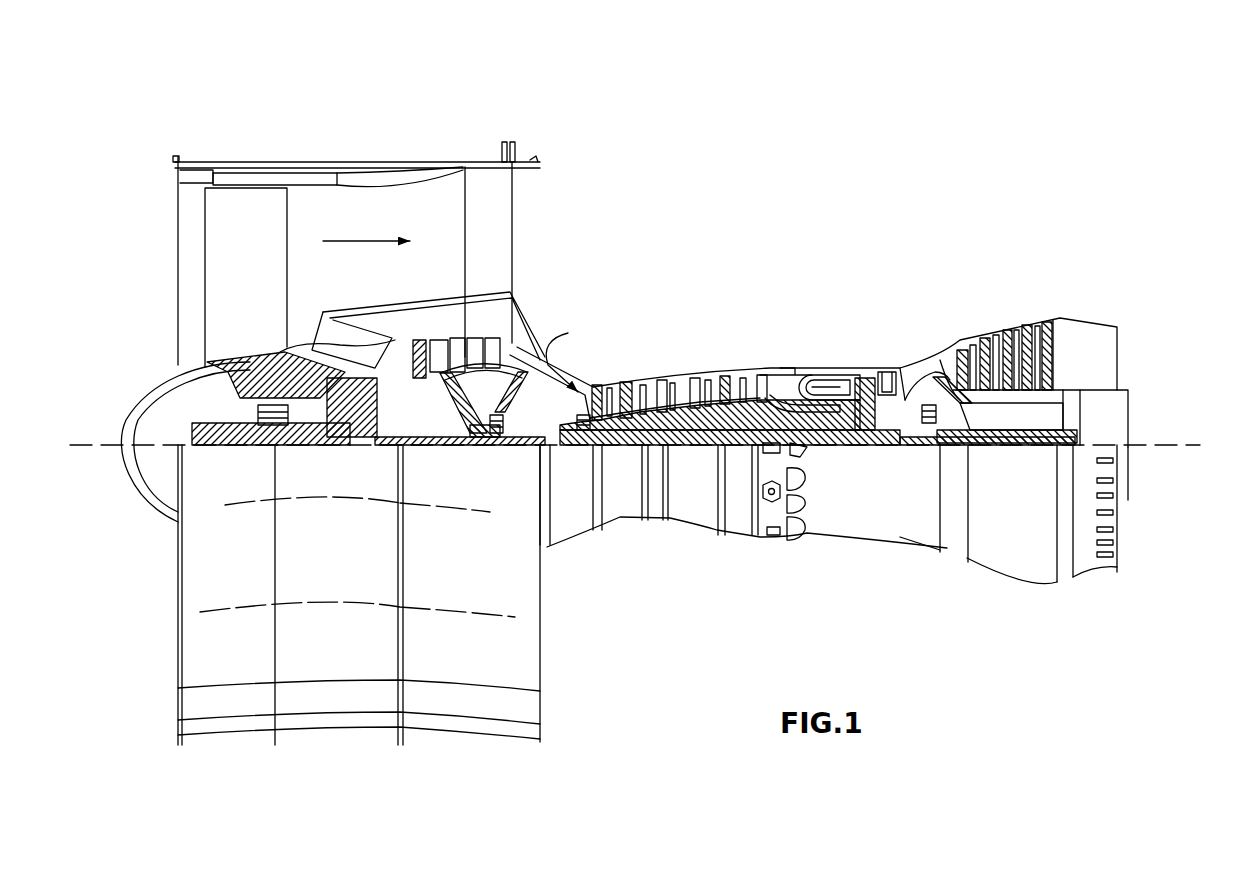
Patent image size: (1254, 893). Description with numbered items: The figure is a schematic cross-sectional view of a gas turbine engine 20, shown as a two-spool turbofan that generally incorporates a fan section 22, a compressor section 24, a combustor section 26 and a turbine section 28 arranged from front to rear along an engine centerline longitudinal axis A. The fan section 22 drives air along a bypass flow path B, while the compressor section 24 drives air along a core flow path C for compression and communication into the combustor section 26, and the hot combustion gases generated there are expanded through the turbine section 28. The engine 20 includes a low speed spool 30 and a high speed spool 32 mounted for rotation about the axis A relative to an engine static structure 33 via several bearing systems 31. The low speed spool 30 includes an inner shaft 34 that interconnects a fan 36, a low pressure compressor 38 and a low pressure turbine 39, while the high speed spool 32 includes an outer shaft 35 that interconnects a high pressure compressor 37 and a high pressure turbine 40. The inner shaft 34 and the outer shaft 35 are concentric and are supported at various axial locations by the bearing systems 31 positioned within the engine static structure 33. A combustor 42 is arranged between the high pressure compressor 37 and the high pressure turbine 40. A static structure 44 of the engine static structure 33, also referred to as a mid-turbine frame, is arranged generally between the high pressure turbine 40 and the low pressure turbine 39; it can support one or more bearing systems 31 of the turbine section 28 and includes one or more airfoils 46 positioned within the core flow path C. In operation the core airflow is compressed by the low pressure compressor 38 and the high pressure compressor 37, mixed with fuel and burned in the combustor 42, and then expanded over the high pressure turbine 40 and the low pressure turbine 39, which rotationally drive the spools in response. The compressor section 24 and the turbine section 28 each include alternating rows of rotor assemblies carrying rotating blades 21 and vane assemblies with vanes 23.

The gas turbine engine 20 is at (820, 212).
The rotating blades 21 is at (422, 343).
The fan section 22 is at (287, 157).
The vanes 23 is at (472, 347).
The compressor section 24 is at (590, 355).
The combustor section 26 is at (812, 340).
The turbine section 28 is at (958, 308).
The low speed spool 30 is at (695, 448).
The bearing systems 31 is at (270, 415).
The high speed spool 32 is at (737, 400).
The engine static structure 33 is at (737, 533).
The inner shaft 34 is at (566, 450).
The outer shaft 35 is at (823, 445).
The fan 36 is at (260, 293).
The high pressure compressor 37 is at (672, 405).
The low pressure compressor 38 is at (514, 300).
The low pressure turbine 39 is at (1005, 337).
The high pressure turbine 40 is at (877, 363).
The combustor 42 is at (810, 387).
The static structure 44 is at (922, 357).
The airfoils 46 is at (953, 412).
The engine centerline longitudinal axis A is at (1200, 445).
The bypass flow path B is at (358, 241).
The core flow path C is at (551, 370).